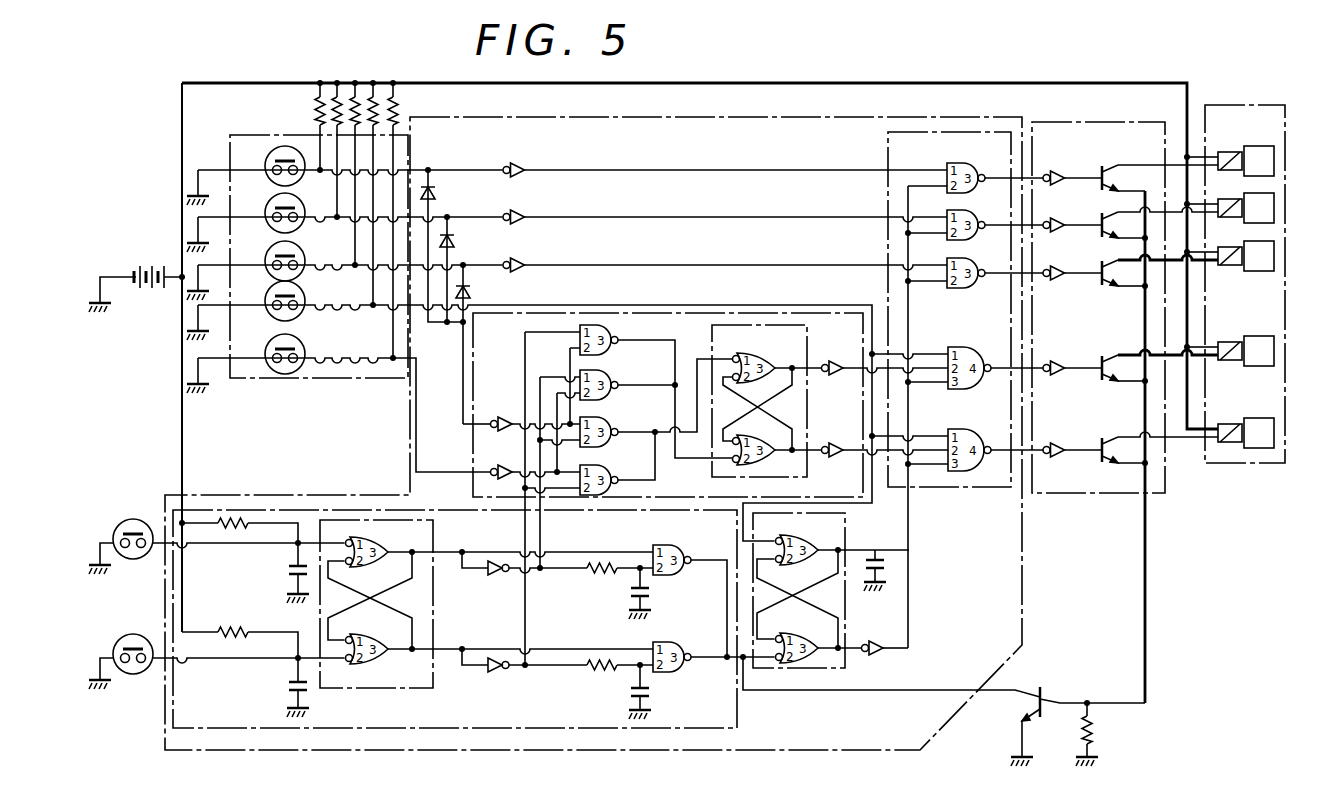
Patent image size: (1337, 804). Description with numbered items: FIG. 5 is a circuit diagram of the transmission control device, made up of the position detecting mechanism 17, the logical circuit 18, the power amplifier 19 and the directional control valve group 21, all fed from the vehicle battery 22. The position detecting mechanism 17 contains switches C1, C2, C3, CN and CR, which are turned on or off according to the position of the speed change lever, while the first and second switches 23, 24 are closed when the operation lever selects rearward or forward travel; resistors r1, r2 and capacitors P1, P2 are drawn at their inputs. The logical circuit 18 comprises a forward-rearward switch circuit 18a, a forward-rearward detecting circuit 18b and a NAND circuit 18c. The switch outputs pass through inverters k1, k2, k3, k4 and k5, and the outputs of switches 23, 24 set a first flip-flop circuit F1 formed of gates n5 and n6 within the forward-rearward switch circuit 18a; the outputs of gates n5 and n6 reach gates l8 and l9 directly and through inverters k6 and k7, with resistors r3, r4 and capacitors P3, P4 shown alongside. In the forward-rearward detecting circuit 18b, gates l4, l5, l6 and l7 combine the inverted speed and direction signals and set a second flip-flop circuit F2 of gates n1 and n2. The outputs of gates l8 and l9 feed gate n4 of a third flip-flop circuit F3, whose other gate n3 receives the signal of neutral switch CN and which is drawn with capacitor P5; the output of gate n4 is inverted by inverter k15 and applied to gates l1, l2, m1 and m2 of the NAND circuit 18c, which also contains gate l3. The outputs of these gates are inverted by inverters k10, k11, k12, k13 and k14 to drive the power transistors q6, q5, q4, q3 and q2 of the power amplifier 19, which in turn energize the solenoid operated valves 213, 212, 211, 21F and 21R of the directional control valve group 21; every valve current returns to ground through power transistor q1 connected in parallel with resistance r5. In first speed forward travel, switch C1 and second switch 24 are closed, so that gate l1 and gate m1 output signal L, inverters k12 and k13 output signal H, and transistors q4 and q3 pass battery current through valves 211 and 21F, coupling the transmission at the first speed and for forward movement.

The position detecting mechanism 17 is at (241, 133).
The logical circuit 18 is at (996, 113).
The forward-rearward switch circuit 18a is at (742, 700).
The forward-rearward detecting circuit 18b is at (471, 405).
The NAND circuit 18c is at (934, 489).
The power amplifier 19 is at (1128, 121).
The directional control valve group 21 is at (1244, 106).
The solenoid operated valve for the first speed 211 is at (1268, 254).
The solenoid operated valve for the second speed 212 is at (1268, 200).
The solenoid operated valve 213 is at (1252, 158).
The solenoid operated valve for the forward movement 21F is at (1252, 348).
The solenoid operated valve for the rearward movement 21R is at (1252, 430).
The battery 22 is at (150, 268).
The first switch 23 is at (130, 637).
The second switch 24 is at (130, 518).
The first speed switch C1 is at (345, 269).
The switch C2 is at (345, 221).
The switch C3 is at (345, 174).
The switch CN is at (529, 411).
The switch CR is at (339, 401).
The inverter k1 is at (725, 167).
The inverter k2 is at (725, 214).
The inverter k3 is at (725, 262).
The inverter k4 is at (521, 419).
The inverter k5 is at (532, 469).
The inverter k6 is at (524, 580).
The inverter k7 is at (524, 676).
The inverter k10 is at (1070, 170).
The inverter k11 is at (1070, 217).
The inverter k12 is at (1070, 265).
The inverter k13 is at (1070, 360).
The inverter k14 is at (1070, 442).
The inverter k15 is at (885, 643).
The gate l1 is at (995, 268).
The gate l2 is at (995, 220).
The gate l3 is at (995, 173).
The gate l4 is at (629, 386).
The gate l5 is at (609, 384).
The gate l6 is at (636, 407).
The gate l7 is at (590, 467).
The gate l8 is at (690, 592).
The gate l9 is at (714, 651).
The gate m1 is at (995, 358).
The gate m2 is at (995, 440).
The gate n1 is at (772, 387).
The gate n2 is at (772, 425).
The gate n3 is at (833, 577).
The gate n4 is at (809, 614).
The gate n5 is at (395, 580).
The gate n6 is at (395, 614).
The first flip-flop circuit F1 is at (438, 548).
The second flip-flop circuit F2 is at (810, 356).
The third flip-flop circuit F3 is at (847, 648).
The capacitor P1 is at (283, 573).
The capacitor P2 is at (283, 687).
The capacitor P3 is at (654, 593).
The capacitor P4 is at (654, 692).
The capacitor P5 is at (885, 560).
The resistor r1 is at (238, 531).
The resistor r2 is at (240, 630).
The resistor r3 is at (616, 583).
The resistor r4 is at (616, 680).
The resistance r5 is at (1097, 733).
The power transistor q1 is at (1078, 715).
The power transistor q2 is at (1154, 440).
The power transistor q3 is at (1154, 358).
The power transistor q4 is at (1154, 263).
The power transistor q5 is at (1154, 215).
The power transistor q6 is at (1154, 166).